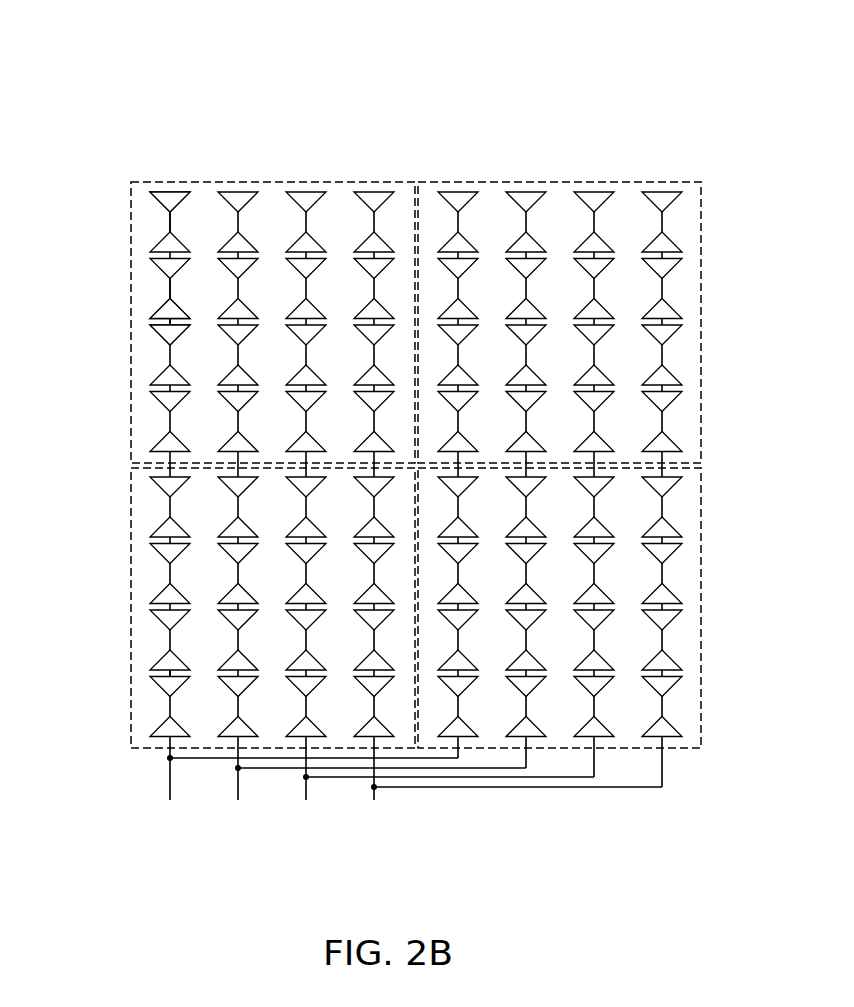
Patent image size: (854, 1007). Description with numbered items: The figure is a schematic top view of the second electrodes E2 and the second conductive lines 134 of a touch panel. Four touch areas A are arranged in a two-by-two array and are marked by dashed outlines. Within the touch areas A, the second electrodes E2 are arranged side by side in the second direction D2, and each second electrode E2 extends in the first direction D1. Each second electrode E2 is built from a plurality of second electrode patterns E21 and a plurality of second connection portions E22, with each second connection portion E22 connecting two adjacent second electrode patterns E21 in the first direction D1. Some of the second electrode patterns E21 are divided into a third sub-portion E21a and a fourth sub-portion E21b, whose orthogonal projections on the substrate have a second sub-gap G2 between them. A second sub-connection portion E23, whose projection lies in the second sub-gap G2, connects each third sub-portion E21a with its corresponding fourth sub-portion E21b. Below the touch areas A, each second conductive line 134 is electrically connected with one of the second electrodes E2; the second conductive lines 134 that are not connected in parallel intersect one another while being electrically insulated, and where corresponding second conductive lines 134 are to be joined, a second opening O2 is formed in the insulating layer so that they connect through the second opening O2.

The second electrode E2 is at (415, 461).
The second electrode pattern E21 is at (165, 197).
The second connection portion E22 is at (169, 290).
The third sub-portion E21a is at (165, 312).
The fourth sub-portion E21b is at (167, 333).
The second sub-connection portion E23 is at (190, 323).
The second sub-gap G2 is at (160, 675).
The second conductive line 134 is at (170, 800).
The second opening O2 is at (379, 791).
The touch area A is at (131, 197).
The first direction D1 is at (73, 20).
The second direction D2 is at (73, 20).